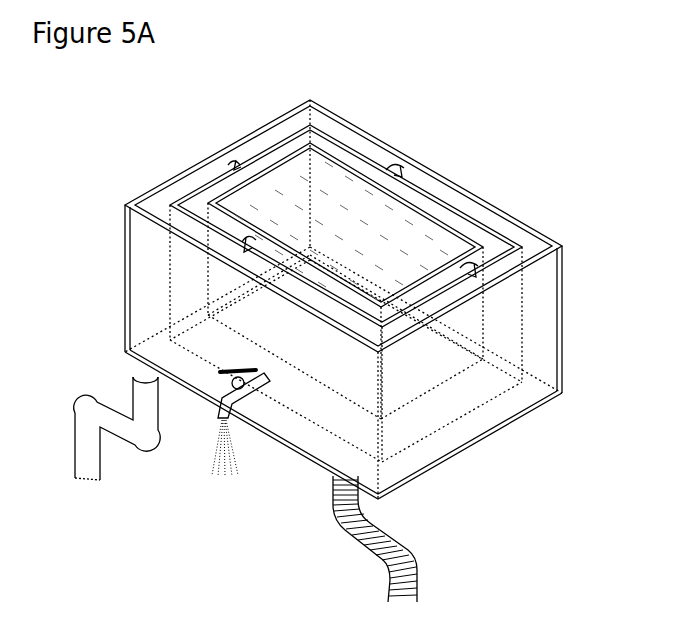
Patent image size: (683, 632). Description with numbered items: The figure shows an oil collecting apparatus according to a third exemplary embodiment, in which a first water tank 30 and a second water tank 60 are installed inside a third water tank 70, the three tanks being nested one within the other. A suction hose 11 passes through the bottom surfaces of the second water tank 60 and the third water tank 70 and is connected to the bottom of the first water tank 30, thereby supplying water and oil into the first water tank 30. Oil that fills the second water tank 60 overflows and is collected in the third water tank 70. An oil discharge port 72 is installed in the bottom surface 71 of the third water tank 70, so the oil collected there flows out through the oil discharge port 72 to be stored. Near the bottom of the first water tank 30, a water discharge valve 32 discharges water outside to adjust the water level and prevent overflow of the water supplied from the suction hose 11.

The first water tank 30 is at (412, 197).
The second water tank 60 is at (492, 222).
The third water tank 70 is at (540, 242).
The bottom surface 71 is at (465, 437).
The oil discharge port 72 is at (152, 272).
The water discharge valve 32 is at (213, 407).
The suction hose 11 is at (417, 552).